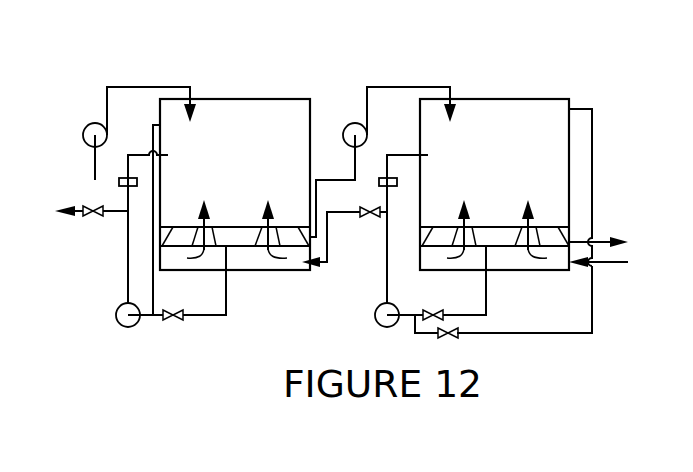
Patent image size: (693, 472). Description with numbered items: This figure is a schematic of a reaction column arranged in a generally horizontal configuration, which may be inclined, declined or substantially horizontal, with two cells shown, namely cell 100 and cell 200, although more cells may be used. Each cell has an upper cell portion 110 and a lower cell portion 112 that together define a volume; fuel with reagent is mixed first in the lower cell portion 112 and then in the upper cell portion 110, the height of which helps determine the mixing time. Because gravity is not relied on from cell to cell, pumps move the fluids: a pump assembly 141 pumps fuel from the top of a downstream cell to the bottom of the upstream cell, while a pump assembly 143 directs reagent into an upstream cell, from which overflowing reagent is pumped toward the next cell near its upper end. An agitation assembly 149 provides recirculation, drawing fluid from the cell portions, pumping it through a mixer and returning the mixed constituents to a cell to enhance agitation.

The cell 100 is at (495, 80).
The cell 200 is at (235, 80).
The upper cell portion 110 is at (558, 143).
The lower cell portion 112 is at (548, 238).
The pump assembly 141 is at (592, 298).
The pump assembly 143 is at (408, 86).
The agitation assembly 149 is at (366, 314).